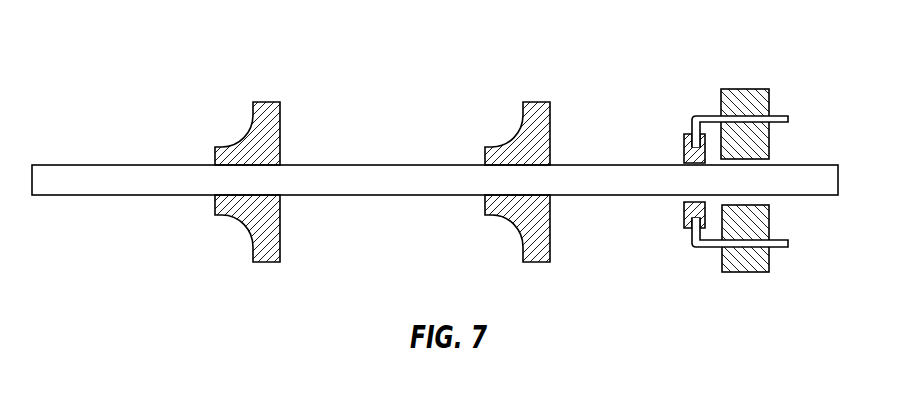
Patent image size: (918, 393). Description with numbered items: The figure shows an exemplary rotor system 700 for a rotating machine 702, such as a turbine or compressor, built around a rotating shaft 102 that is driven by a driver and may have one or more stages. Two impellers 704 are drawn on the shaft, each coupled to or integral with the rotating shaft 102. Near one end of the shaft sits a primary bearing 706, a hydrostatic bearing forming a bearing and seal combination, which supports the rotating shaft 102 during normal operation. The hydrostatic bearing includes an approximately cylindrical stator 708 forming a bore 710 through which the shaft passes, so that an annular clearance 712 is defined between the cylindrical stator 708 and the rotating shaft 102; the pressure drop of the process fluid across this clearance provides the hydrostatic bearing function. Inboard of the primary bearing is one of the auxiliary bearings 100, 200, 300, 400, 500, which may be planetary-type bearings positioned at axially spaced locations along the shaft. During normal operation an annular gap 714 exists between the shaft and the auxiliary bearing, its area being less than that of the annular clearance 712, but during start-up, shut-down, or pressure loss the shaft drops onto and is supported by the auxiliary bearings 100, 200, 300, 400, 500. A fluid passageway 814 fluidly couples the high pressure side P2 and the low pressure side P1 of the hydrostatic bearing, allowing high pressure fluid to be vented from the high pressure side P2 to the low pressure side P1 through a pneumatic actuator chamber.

The rotating machine 702 is at (137, 61).
The rotating shaft 102 is at (360, 196).
The impeller 704 is at (267, 101).
The rotor system 700 is at (606, 117).
The auxiliary bearing 100 is at (705, 127).
The auxiliary bearing 200 is at (705, 127).
The auxiliary bearing 300 is at (705, 127).
The auxiliary bearing 400 is at (705, 127).
The auxiliary bearing 500 is at (687, 133).
The annular gap 714 is at (686, 164).
The annular clearance 712 is at (723, 202).
The primary bearing 706 is at (780, 134).
The cylindrical stator 708 is at (770, 146).
The bore 710 is at (770, 162).
The fluid passageway 814 is at (752, 250).
The low pressure side P1 is at (803, 248).
The high pressure side P2 is at (682, 246).